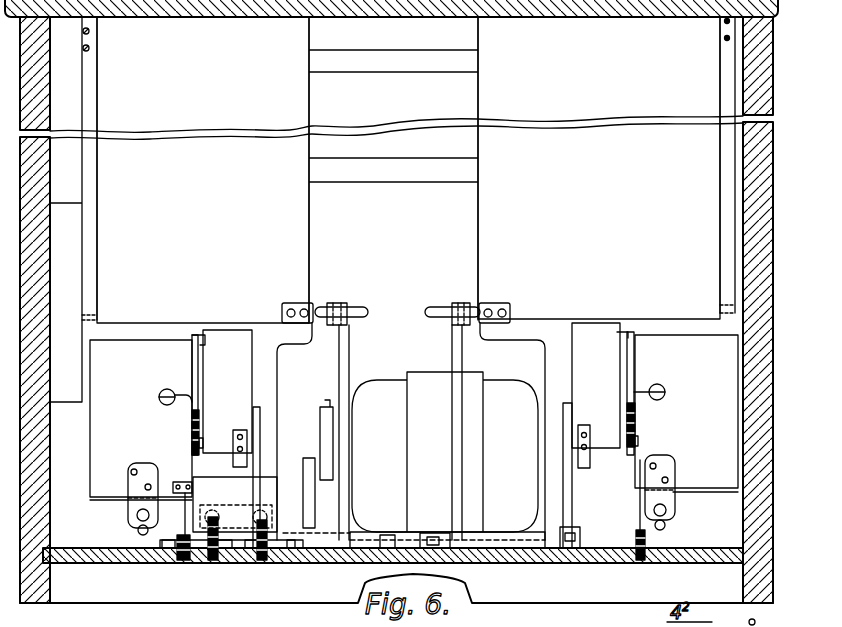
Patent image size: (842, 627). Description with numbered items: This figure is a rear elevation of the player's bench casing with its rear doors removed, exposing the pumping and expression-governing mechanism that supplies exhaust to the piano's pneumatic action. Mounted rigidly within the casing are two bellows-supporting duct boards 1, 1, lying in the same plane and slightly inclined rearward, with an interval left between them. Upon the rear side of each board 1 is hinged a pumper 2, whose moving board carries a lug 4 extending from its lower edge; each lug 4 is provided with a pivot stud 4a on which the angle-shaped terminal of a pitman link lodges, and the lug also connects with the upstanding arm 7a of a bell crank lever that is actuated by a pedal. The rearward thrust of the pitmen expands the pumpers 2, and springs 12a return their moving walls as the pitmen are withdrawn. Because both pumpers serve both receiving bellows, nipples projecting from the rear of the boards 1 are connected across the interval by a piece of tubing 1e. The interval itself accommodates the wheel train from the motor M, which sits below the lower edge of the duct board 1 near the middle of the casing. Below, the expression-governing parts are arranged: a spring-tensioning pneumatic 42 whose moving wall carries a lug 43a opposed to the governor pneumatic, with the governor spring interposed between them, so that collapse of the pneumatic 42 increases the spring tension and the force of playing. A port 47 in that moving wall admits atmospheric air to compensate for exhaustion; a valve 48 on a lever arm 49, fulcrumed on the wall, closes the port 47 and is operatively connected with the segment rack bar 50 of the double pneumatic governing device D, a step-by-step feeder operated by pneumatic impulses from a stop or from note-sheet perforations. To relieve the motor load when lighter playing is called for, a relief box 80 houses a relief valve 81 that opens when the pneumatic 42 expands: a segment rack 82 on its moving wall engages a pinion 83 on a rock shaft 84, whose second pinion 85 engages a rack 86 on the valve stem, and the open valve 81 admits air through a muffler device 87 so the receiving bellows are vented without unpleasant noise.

The bellows-supporting duct board 1 is at (279, 368).
The piece of tubing 1e is at (397, 63).
The pumper 2 is at (408, 170).
The lug 4 is at (296, 305).
The pivot stud 4a is at (356, 308).
The upstanding arm 7a is at (343, 352).
The spring 12a is at (93, 260).
The spring-tensioning pneumatic 42 is at (414, 417).
The lug 43a is at (128, 510).
The port 47 is at (166, 406).
The valve 48 is at (166, 389).
The lever arm 49 is at (198, 370).
The segment rack bar 50 is at (202, 445).
The relief box 80 is at (236, 508).
The relief valve 81 is at (213, 497).
The segment rack 82 is at (185, 528).
The pinion 83 is at (179, 550).
The rock shaft 84 is at (205, 550).
The second pinion 85 is at (216, 560).
The rack 86 is at (265, 530).
The muffler device 87 is at (277, 478).
The double pneumatic governing device D is at (231, 337).
The motor M is at (447, 460).